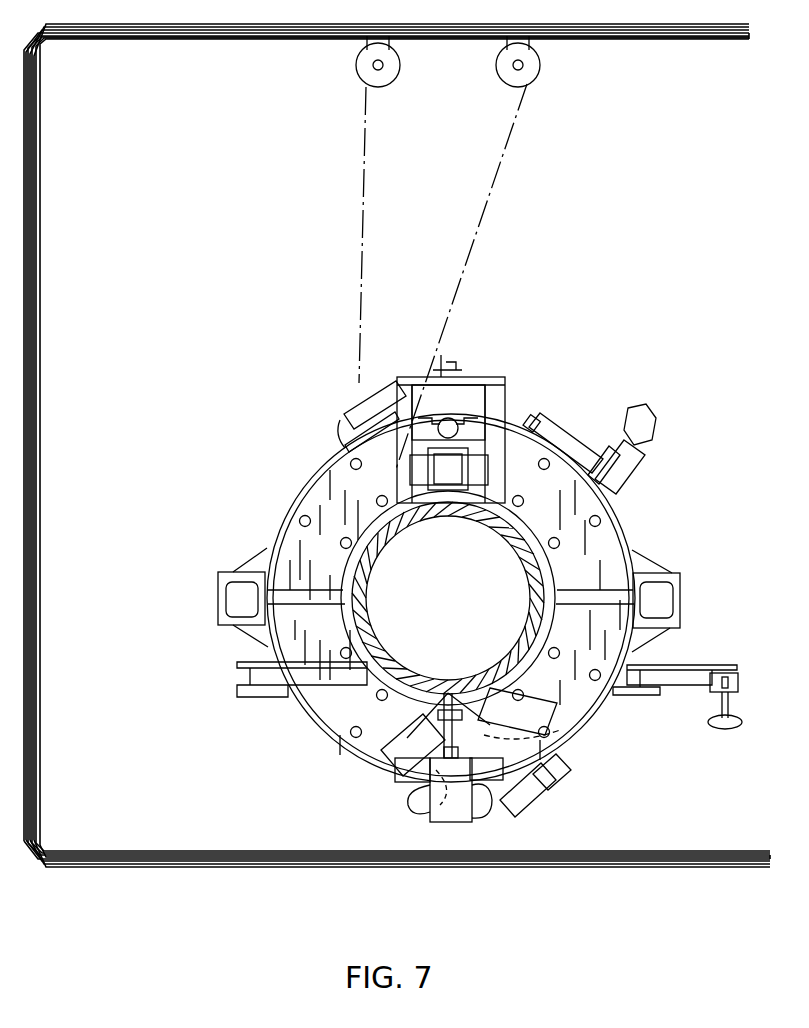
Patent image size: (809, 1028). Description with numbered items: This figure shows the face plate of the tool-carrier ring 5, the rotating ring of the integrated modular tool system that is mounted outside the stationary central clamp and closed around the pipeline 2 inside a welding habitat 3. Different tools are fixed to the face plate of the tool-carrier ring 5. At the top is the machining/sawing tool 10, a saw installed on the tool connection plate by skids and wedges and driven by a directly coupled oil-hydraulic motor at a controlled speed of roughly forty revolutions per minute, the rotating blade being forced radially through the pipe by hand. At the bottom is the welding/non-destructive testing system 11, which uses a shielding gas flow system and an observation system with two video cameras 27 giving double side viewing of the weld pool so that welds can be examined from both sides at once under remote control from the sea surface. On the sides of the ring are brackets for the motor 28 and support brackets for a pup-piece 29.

The welding habitat 3 is at (160, 37).
The pipeline 2 is at (345, 558).
The tool-carrier ring 5 is at (608, 545).
The machining/sawing tool 10 is at (496, 412).
The welding/non-destructive testing system 11 is at (430, 786).
The video cameras 27 is at (540, 718).
The brackets for the motor 28 is at (684, 578).
The support brackets for a pup-piece 29 is at (713, 665).